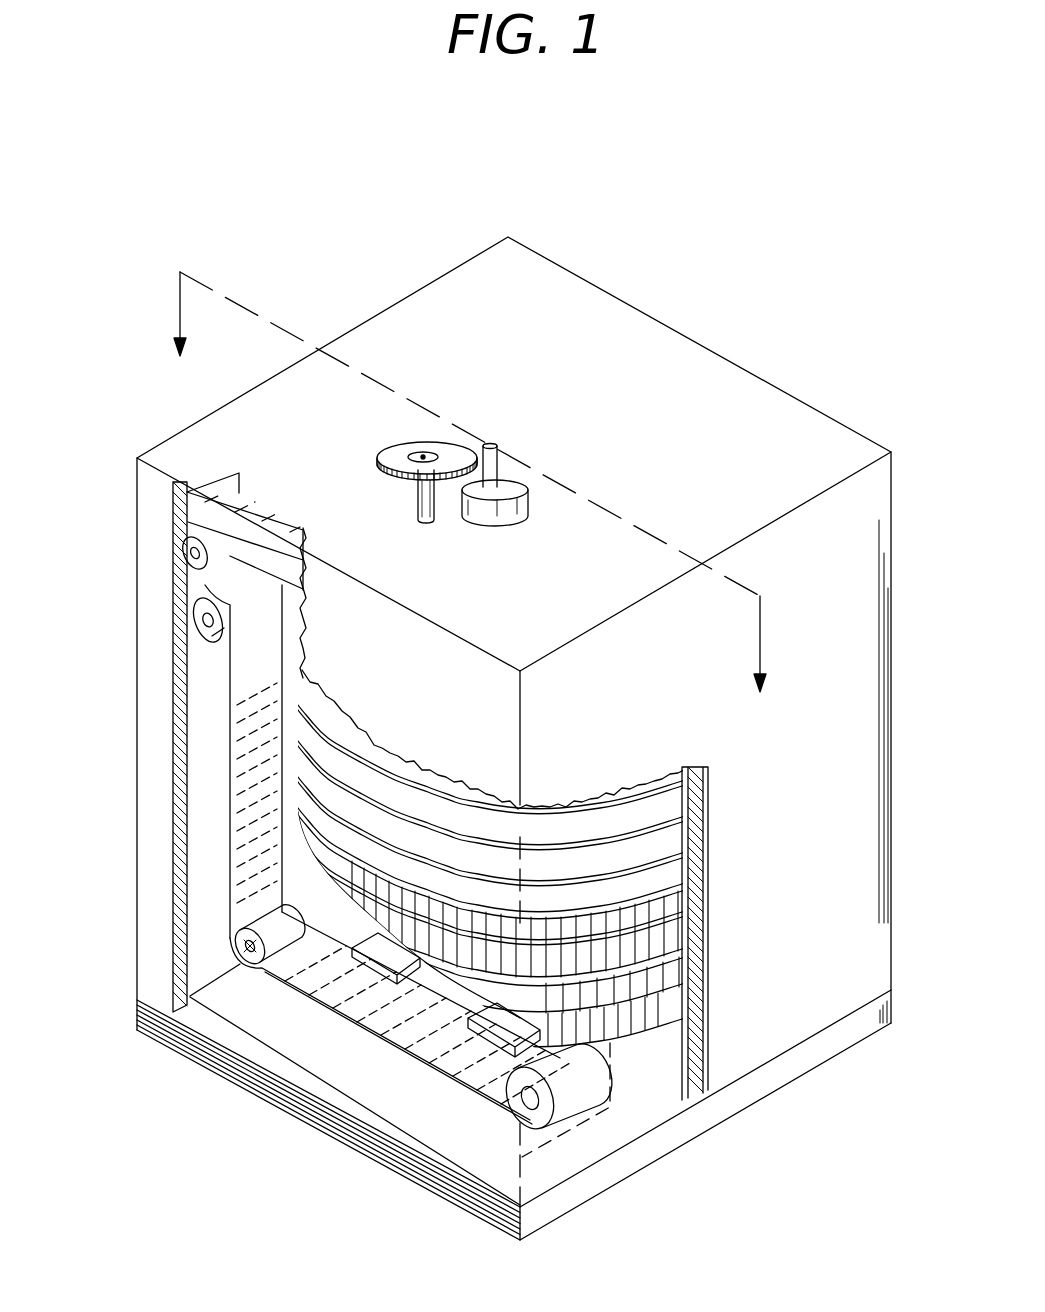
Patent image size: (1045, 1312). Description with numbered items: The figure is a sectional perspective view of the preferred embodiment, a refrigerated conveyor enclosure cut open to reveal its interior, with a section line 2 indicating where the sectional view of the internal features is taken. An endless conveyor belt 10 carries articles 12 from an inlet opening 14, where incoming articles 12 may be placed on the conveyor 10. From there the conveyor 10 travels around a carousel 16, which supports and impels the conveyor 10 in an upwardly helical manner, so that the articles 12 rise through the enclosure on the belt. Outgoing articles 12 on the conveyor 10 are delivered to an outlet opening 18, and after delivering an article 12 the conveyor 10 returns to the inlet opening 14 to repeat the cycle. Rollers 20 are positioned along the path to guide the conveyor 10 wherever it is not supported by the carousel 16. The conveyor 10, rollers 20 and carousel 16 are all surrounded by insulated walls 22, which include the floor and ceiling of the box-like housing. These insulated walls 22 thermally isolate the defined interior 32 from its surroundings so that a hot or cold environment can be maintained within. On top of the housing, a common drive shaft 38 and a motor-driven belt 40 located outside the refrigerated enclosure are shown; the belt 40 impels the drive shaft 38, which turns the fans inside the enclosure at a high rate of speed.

The endless conveyor belt 10 is at (575, 1083).
The articles 12 is at (493, 1032).
The inlet opening 14 is at (612, 1103).
The carousel 16 is at (645, 950).
The outlet opening 18 is at (239, 488).
The rollers 20 is at (192, 560).
The insulated walls 22 is at (802, 471).
The interior 32 is at (682, 1069).
The drive shaft 38 is at (417, 497).
The motor-driven belt 40 is at (404, 460).
The section line 2- 2 is at (470, 497).